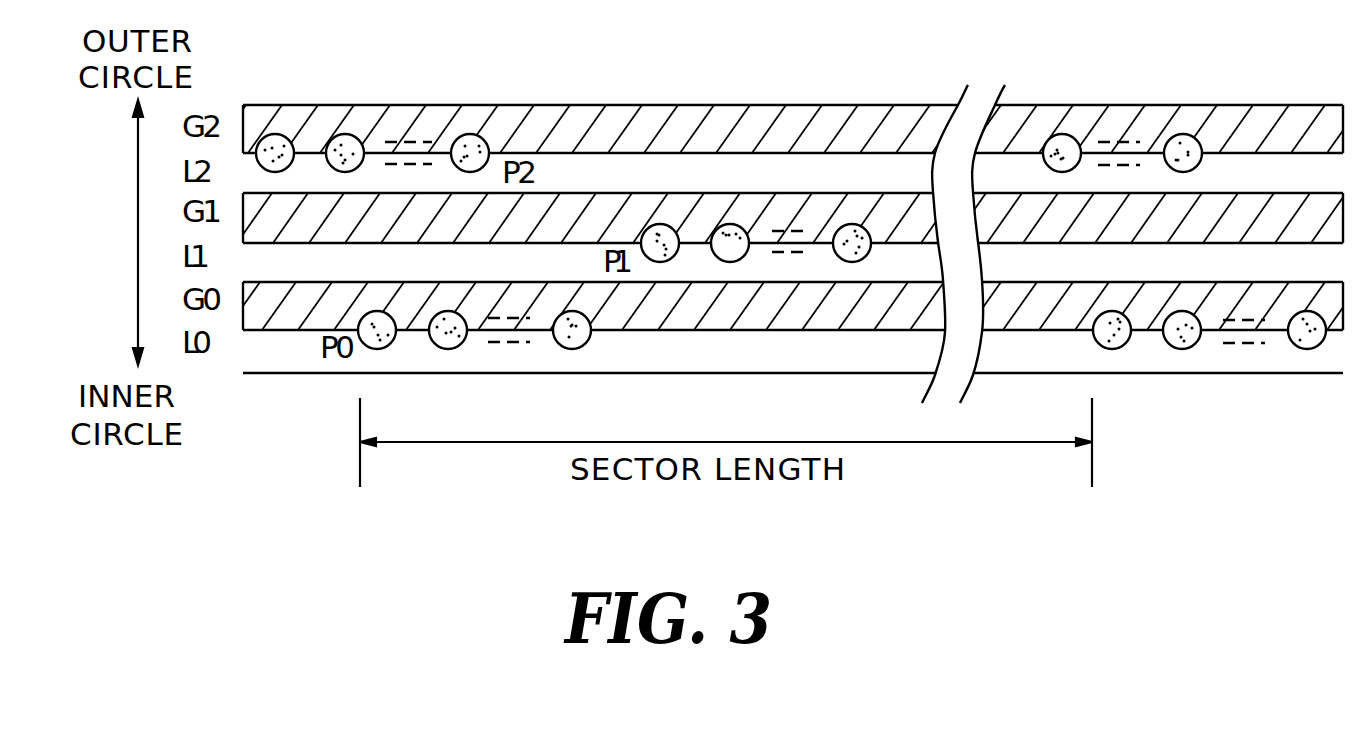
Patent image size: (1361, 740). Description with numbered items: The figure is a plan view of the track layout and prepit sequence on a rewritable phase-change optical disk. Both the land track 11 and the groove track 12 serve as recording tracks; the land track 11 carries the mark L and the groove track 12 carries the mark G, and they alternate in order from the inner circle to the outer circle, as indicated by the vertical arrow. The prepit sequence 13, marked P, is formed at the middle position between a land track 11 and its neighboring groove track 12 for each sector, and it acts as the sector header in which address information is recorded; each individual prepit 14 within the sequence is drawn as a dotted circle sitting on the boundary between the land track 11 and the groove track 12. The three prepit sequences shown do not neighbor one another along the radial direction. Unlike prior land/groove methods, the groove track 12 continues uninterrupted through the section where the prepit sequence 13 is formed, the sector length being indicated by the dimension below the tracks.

The land track 11 is at (628, 178).
The groove track 12 is at (780, 130).
The prepit sequence 13 is at (411, 92).
The pit 14 is at (509, 114).